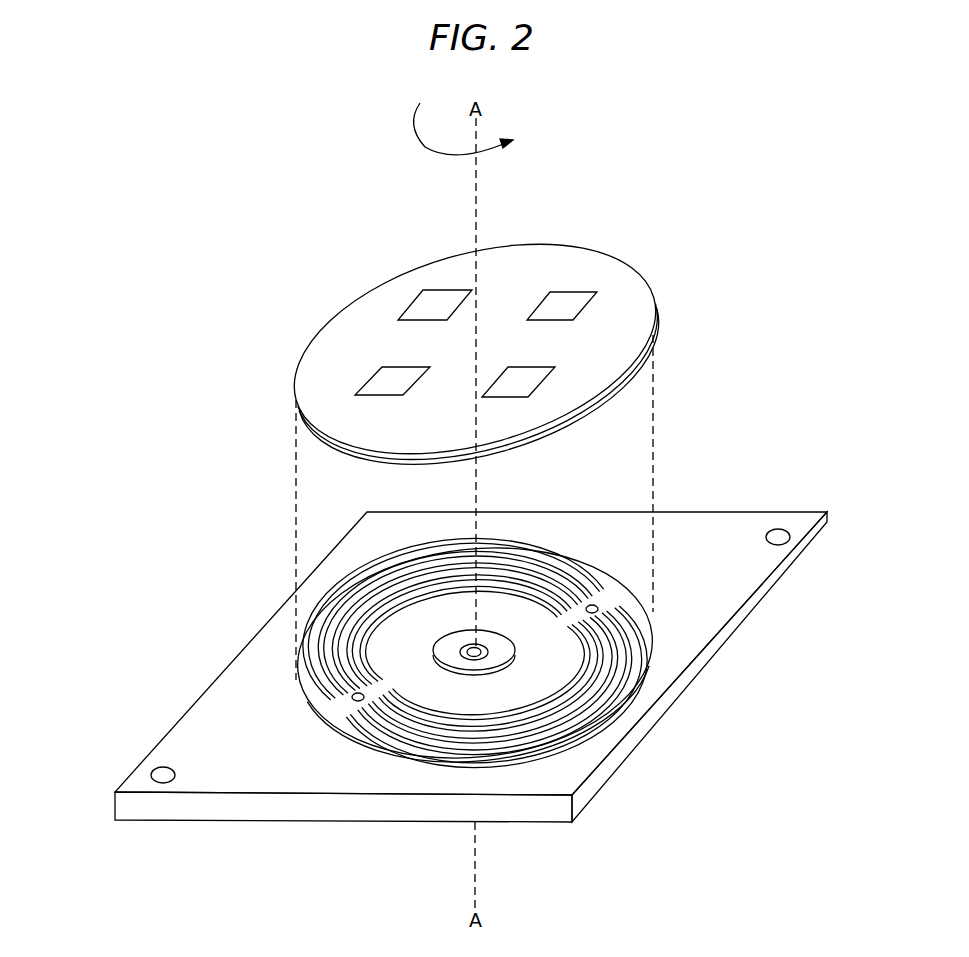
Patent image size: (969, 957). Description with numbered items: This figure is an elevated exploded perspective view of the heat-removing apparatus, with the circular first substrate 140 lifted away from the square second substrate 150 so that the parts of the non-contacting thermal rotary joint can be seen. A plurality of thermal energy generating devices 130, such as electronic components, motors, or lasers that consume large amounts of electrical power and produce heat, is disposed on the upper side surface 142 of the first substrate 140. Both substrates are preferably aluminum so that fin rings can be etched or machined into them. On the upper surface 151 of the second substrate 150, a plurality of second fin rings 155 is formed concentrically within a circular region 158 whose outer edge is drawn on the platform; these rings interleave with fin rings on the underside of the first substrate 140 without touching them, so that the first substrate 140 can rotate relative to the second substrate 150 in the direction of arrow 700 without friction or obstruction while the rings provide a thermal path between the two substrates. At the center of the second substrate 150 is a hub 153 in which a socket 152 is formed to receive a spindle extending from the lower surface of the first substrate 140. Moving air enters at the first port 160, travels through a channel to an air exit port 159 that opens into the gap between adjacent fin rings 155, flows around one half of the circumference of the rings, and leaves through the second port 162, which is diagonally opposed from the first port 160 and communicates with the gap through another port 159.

The arrow 700 is at (398, 138).
The thermal energy generating devices 130 is at (428, 306).
The first substrate 140 is at (495, 332).
The upper side surface 142 is at (455, 262).
The second substrate 150 is at (466, 653).
The upper surface 151 is at (765, 590).
The socket 152 is at (492, 650).
The hub 153 is at (437, 651).
The second fin rings 155 is at (462, 573).
The circular support region 158 is at (590, 718).
The air exit port 159 is at (598, 609).
The first port 160 is at (790, 536).
The second port 162 is at (145, 768).